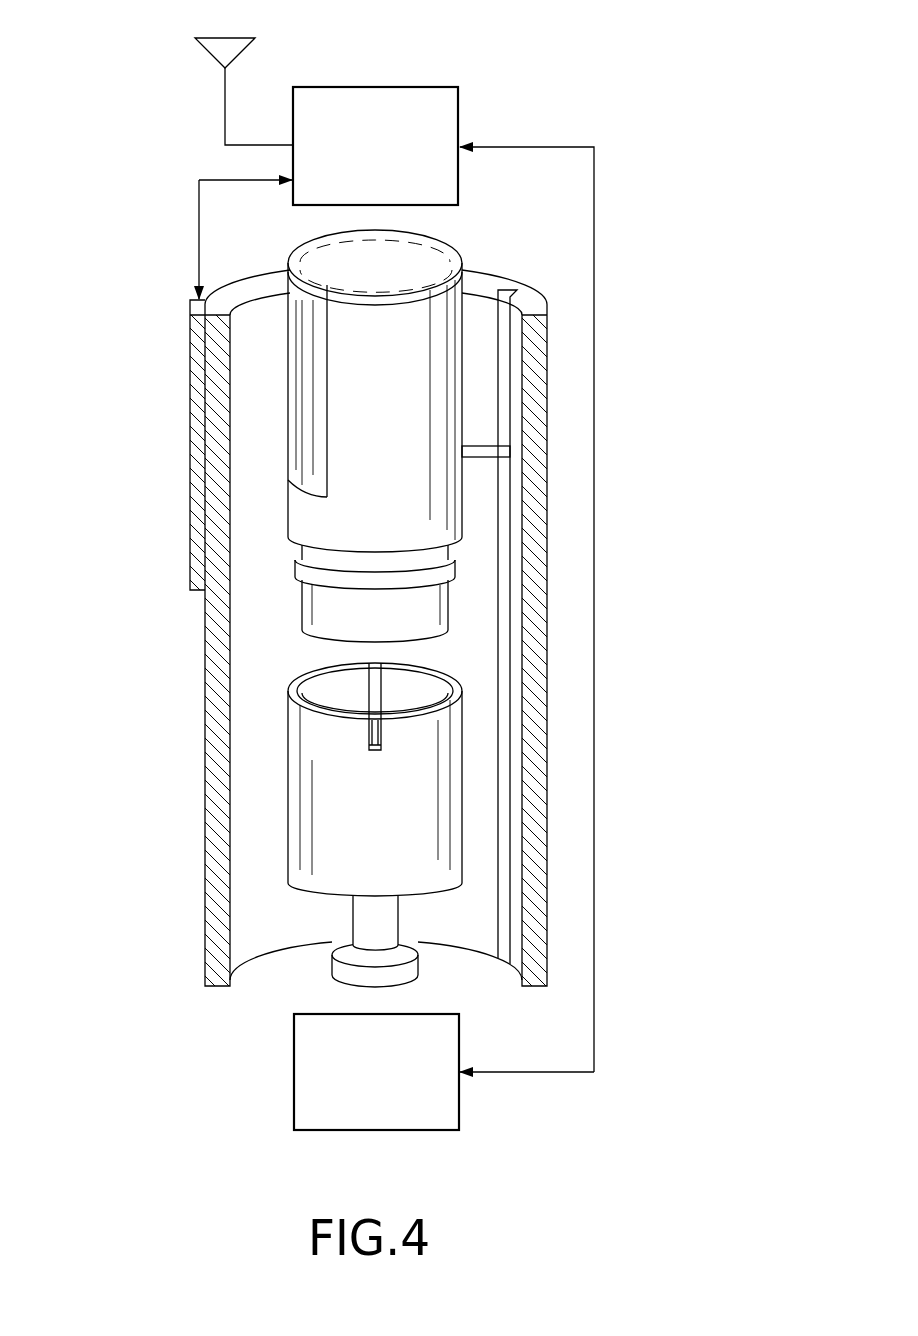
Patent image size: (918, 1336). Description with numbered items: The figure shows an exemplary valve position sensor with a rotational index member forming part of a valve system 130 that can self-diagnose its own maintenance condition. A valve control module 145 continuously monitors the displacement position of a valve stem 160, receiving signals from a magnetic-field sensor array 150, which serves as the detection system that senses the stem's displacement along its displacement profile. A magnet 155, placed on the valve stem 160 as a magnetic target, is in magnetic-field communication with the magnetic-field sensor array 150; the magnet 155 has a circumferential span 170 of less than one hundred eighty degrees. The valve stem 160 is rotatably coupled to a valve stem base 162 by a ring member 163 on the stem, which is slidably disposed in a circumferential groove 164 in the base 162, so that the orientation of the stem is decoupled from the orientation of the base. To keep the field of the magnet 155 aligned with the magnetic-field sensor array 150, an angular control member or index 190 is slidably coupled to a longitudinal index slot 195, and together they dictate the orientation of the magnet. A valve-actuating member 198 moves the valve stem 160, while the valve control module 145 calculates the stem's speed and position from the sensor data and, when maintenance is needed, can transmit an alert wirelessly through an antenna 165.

The valve system 130 is at (683, 166).
The valve control module 145 is at (476, 102).
The magnetic-field sensor array 150 is at (191, 336).
The magnet 155 is at (300, 410).
The valve stem 160 is at (397, 437).
The valve stem base 162 is at (479, 825).
The ring member 163 is at (455, 567).
The circumferential groove 164 is at (428, 690).
The antenna 165 is at (190, 68).
The circumferential span 170 is at (294, 256).
The angular control member or index 190 is at (463, 527).
The longitudinal index slot 195 is at (502, 350).
The valve-actuating member 198 is at (478, 1110).